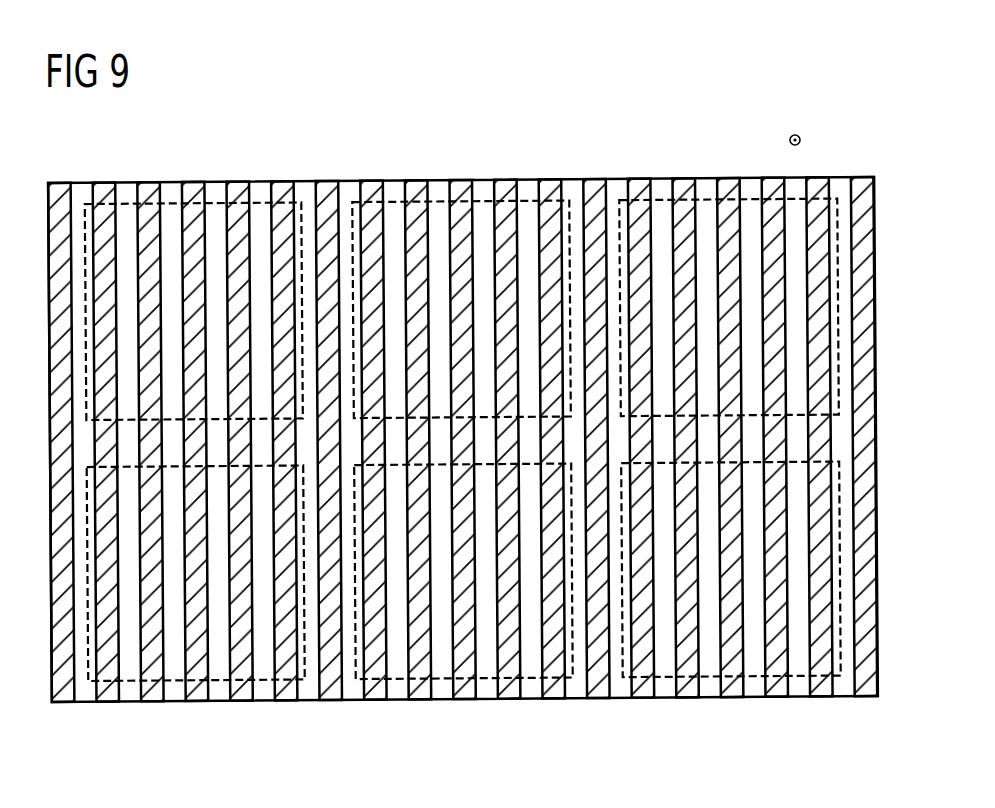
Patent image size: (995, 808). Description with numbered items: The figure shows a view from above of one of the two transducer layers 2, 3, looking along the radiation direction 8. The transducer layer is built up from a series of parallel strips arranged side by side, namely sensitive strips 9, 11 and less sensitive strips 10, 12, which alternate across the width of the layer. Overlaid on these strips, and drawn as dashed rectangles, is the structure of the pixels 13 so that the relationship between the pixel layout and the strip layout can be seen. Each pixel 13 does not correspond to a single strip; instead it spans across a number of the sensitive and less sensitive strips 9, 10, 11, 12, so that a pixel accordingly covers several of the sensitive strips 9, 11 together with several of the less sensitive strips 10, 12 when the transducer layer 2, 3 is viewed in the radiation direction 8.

The transducer layer 2 is at (463, 410).
The transducer layer 3 is at (463, 410).
The radiation direction 8 is at (800, 140).
The sensitive strip 9 is at (462, 414).
The sensitive strip 11 is at (215, 190).
The pixel 13 is at (438, 190).
The less sensitive strip 10 is at (464, 613).
The less sensitive strip 12 is at (240, 693).